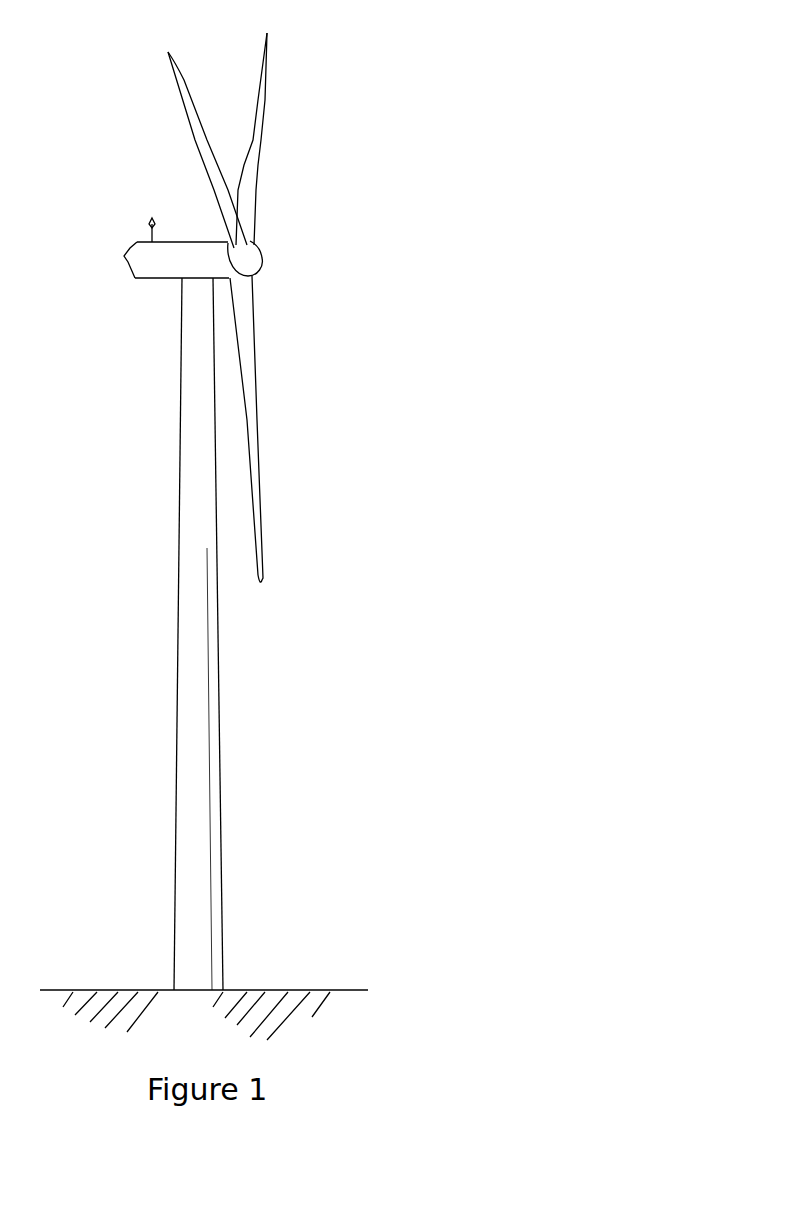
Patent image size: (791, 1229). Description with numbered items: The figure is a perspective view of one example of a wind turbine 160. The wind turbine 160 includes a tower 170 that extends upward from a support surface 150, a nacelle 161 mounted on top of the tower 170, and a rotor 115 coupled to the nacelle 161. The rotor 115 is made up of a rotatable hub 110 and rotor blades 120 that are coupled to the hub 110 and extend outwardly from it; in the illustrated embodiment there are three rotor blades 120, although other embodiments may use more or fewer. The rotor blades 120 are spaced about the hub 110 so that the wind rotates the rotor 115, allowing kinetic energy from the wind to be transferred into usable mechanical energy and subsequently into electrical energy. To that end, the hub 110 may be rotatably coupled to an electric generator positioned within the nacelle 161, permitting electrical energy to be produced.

The wind turbine 160 is at (239, 527).
The support surface 150 is at (112, 990).
The tower 170 is at (180, 735).
The nacelle 161 is at (160, 280).
The rotor 115 is at (268, 240).
The hub 110 is at (262, 264).
The rotor blade 120 is at (255, 68).